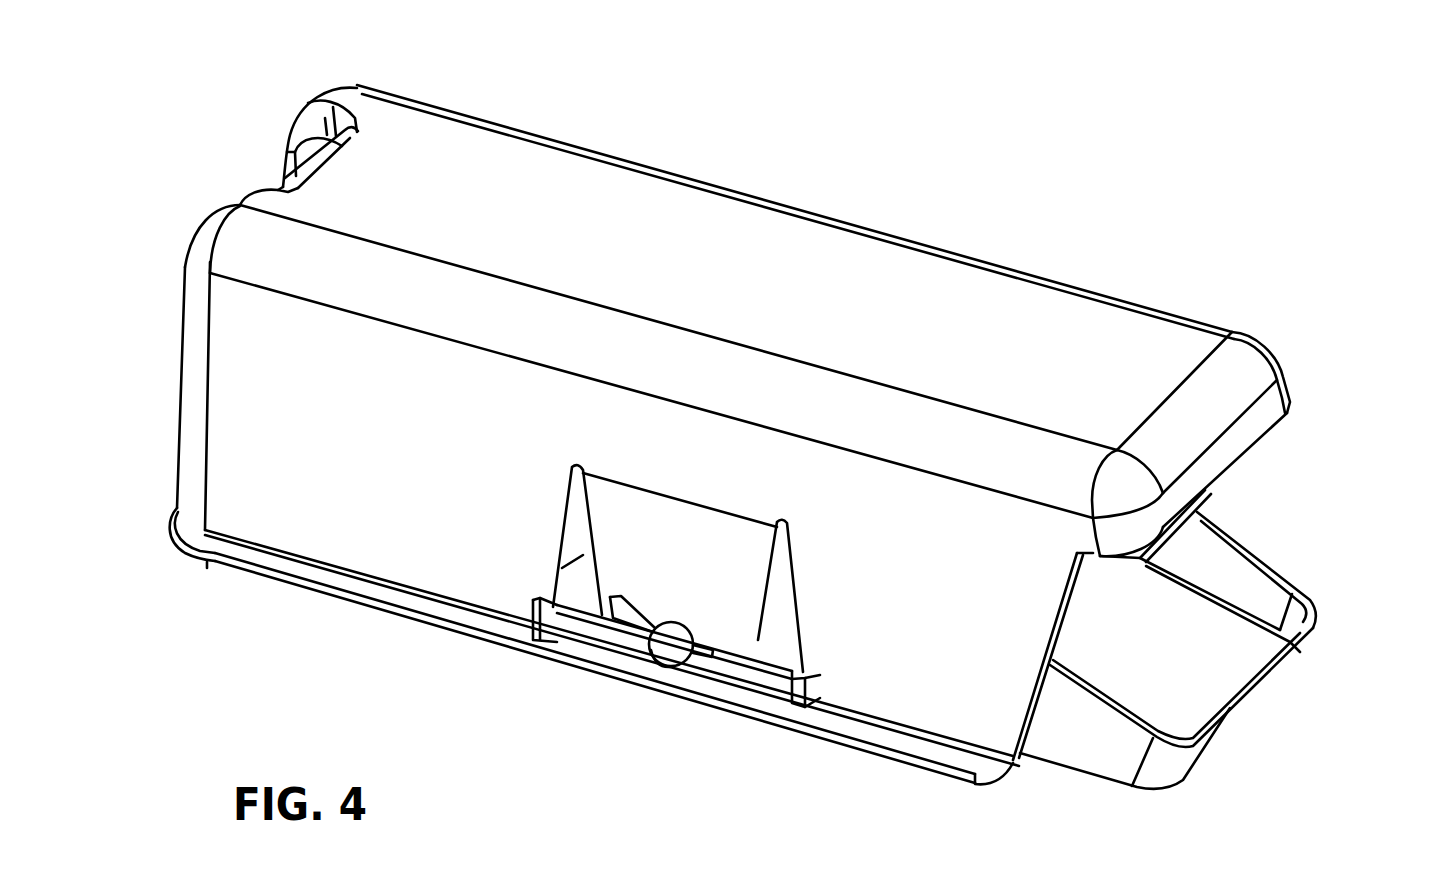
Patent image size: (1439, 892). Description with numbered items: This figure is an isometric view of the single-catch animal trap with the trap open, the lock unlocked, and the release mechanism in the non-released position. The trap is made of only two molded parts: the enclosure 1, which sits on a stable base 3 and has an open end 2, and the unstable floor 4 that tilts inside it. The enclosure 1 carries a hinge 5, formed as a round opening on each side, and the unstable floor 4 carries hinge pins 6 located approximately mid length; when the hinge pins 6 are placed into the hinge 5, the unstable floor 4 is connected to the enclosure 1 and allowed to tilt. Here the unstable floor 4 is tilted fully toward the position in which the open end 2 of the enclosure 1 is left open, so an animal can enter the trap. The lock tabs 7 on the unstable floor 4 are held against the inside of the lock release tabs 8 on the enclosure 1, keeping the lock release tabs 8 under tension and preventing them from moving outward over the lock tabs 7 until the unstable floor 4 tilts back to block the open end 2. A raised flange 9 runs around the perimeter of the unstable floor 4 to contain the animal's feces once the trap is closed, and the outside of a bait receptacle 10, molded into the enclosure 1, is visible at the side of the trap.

The enclosure 1 is at (1005, 300).
The open end 2 is at (1208, 508).
The stable base 3 is at (980, 760).
The unstable floor 4 is at (1180, 698).
The hinge 5 is at (664, 658).
The hinge pins 6 is at (668, 660).
The lock tabs 7 is at (613, 603).
The lock release tabs 8 is at (620, 577).
The raised flange 9 is at (1297, 652).
The bait receptacle 10 is at (325, 100).